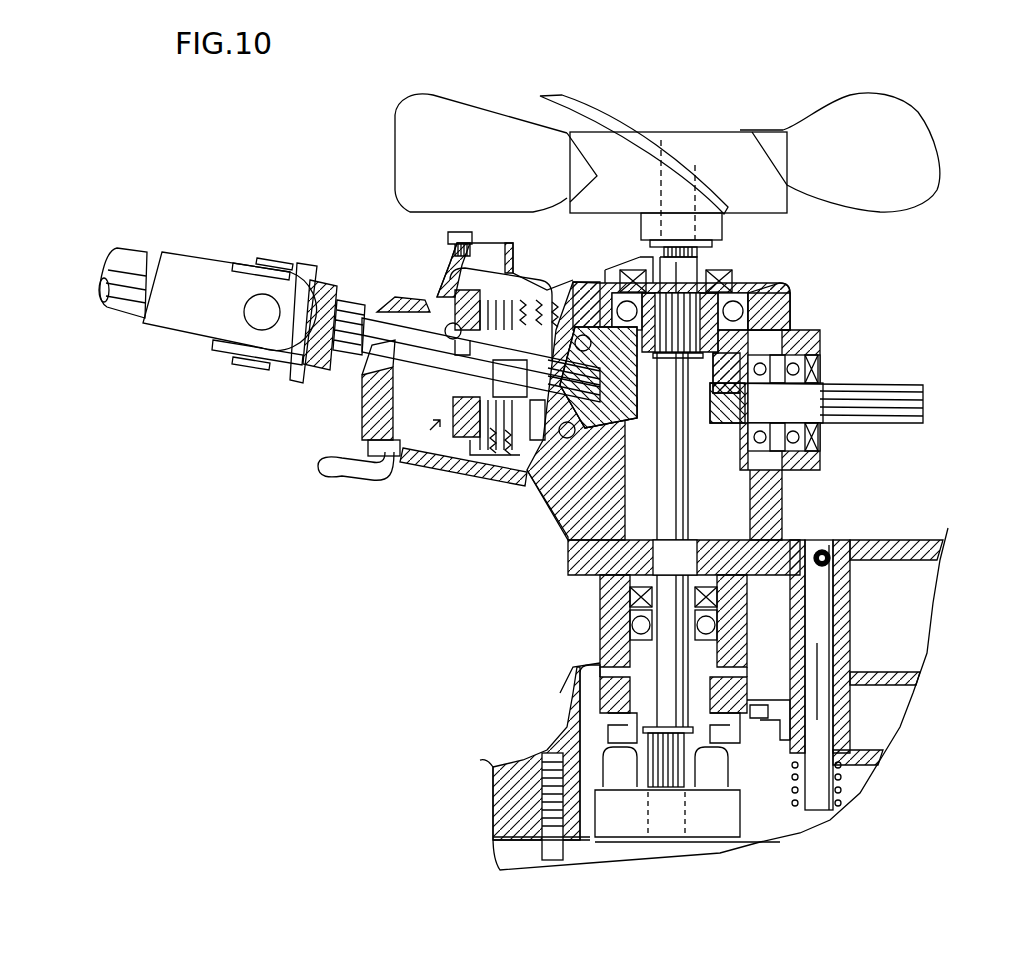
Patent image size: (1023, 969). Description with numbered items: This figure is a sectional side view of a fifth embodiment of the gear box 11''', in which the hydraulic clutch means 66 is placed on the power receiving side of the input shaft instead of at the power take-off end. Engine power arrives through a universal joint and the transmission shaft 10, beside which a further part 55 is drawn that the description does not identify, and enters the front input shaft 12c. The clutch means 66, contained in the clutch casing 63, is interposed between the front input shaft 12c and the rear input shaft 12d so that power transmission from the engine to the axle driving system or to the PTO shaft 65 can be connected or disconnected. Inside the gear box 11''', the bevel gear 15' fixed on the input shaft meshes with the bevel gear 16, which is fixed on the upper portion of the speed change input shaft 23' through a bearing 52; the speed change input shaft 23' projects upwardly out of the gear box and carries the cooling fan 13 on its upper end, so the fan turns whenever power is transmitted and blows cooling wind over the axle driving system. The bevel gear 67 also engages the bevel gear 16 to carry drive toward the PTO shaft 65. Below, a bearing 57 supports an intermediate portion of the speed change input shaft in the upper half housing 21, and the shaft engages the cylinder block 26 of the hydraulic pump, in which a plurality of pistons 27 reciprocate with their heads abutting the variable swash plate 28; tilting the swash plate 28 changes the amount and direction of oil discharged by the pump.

The cooling fan 13 is at (922, 150).
The transmission shaft 10 is at (150, 262).
The clamp 55 is at (246, 264).
The front input shaft 12c is at (364, 300).
The bearing 52 is at (624, 292).
The PTO shaft 65 is at (882, 385).
The bevel gear 16 is at (645, 398).
The hydraulic clutch means 66 is at (412, 472).
The clutch casing 63 is at (442, 472).
The rear input shaft 12d is at (522, 472).
The bevel gear 15' is at (539, 519).
The speed change input shaft 23' is at (658, 555).
The bevel gear 67 is at (722, 470).
The gear box 11''' is at (615, 626).
The bearing 57 is at (613, 630).
The variable swash plate 28 is at (578, 684).
The upper half housing 21 is at (485, 762).
The pistons 27 is at (687, 816).
The cylinder block 26 is at (770, 793).